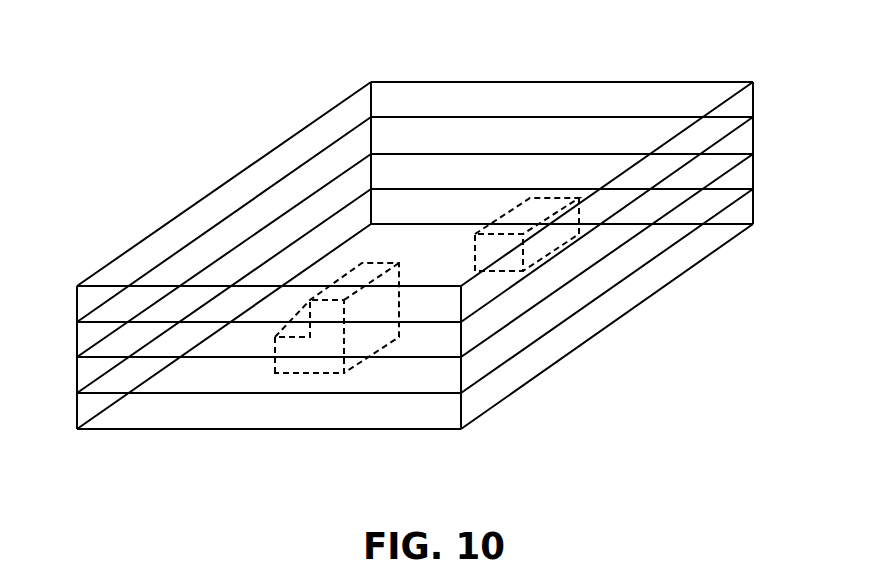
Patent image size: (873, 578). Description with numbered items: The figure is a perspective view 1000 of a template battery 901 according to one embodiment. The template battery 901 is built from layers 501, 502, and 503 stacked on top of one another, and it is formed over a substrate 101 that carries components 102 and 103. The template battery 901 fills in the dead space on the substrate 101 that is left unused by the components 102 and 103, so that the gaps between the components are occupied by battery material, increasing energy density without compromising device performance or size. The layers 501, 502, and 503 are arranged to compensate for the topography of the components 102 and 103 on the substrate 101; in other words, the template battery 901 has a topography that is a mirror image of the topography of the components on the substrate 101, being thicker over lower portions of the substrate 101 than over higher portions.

The perspective view 1000 is at (713, 38).
The template battery 901 is at (758, 102).
The layer 503 is at (77, 306).
The layer 502 is at (77, 340).
The layer 501 is at (77, 378).
The substrate 101 is at (746, 212).
The component 102 is at (334, 345).
The component 103 is at (540, 210).